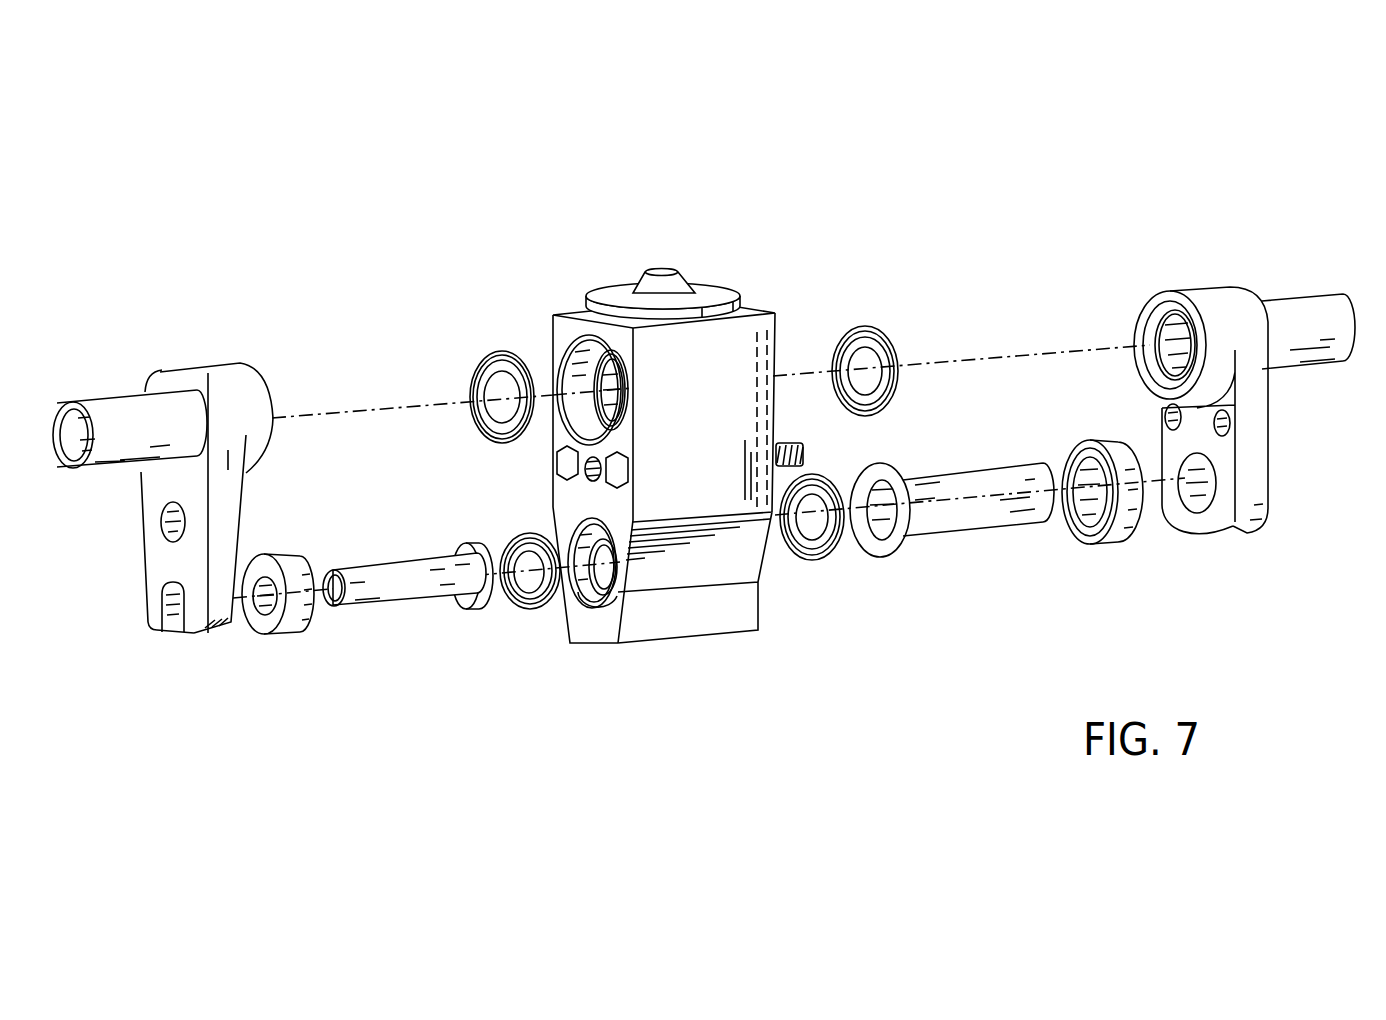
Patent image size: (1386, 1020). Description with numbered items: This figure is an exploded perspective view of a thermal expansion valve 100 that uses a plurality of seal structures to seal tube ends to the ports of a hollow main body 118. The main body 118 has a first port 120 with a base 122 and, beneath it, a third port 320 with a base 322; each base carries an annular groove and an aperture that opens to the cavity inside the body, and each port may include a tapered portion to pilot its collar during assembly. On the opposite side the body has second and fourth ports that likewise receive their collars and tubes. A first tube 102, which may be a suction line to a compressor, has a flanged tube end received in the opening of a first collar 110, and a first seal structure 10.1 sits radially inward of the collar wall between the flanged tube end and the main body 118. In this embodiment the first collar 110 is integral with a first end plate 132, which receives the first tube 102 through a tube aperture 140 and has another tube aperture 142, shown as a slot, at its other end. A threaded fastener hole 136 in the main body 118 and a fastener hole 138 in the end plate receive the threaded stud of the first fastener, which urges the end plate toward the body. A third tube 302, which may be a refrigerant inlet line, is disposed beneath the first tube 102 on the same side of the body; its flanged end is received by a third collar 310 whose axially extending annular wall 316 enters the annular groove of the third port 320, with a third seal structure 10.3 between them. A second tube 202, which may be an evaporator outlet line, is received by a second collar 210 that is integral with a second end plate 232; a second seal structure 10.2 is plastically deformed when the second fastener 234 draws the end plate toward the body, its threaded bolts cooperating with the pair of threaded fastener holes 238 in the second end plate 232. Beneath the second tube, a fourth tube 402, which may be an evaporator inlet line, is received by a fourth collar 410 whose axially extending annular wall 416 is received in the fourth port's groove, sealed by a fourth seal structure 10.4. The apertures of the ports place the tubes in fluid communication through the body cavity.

The thermal expansion valve 100 is at (711, 445).
The first tube 102 is at (95, 398).
The first collar 110 is at (187, 484).
The first end plate 132 is at (187, 484).
The tube aperture 140 is at (152, 378).
The fastener hole 138 is at (163, 524).
The other tube aperture 142 is at (170, 630).
The third collar 310 is at (307, 636).
The axially extending annular wall 316 is at (298, 632).
The third tube 302 is at (378, 565).
The first seal structure 10.1 is at (505, 350).
The third seal structure 10.3 is at (527, 610).
The hollow main body 118 is at (629, 510).
The base 122 is at (625, 432).
The threaded fastener hole 136 is at (588, 482).
The third port 320 is at (635, 619).
The base 322 is at (617, 592).
The first port 120 is at (580, 343).
The second fastener 234 is at (790, 445).
The second seal structure 10.2 is at (864, 328).
The fourth seal structure 10.4 is at (812, 561).
The fourth tube 402 is at (1020, 540).
The fourth collar 410 is at (1130, 526).
The axially extending annular wall 416 is at (1130, 530).
The second tube 202 is at (1330, 290).
The second collar 210 is at (1243, 402).
The second end plate 232 is at (1243, 402).
The threaded fastener holes 238 is at (1230, 420).